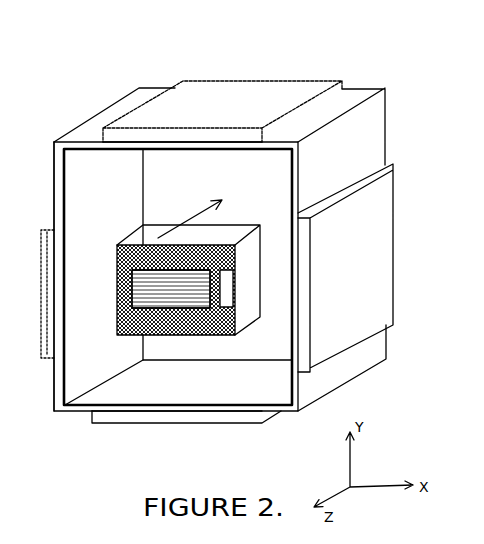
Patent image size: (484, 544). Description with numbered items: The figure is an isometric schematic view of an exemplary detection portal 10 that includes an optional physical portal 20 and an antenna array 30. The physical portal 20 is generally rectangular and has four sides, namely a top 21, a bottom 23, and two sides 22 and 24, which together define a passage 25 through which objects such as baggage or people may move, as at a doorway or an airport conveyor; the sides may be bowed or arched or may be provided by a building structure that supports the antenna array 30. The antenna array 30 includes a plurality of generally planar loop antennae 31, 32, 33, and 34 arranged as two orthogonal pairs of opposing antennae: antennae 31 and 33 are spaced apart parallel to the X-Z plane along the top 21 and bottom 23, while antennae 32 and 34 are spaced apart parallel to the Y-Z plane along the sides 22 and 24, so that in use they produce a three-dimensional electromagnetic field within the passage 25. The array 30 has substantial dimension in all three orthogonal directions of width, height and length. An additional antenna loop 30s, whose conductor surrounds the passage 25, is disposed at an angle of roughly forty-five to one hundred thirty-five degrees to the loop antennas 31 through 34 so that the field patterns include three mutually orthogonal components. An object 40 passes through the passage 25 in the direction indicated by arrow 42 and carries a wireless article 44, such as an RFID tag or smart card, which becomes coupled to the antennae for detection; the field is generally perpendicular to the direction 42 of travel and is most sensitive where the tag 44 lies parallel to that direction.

The detection portal 10 is at (93, 78).
The physical portal 20 is at (399, 108).
The top 21 is at (352, 98).
The side 22 is at (376, 354).
The bottom 23 is at (292, 411).
The side 24 is at (53, 393).
The passage 25 is at (276, 182).
The antenna array 30 is at (228, 247).
The additional antenna loop 30s is at (122, 152).
The loop antenna 31 is at (279, 81).
The loop antenna 32 is at (385, 217).
The loop antenna 33 is at (178, 418).
The loop antenna 34 is at (43, 250).
The object 40 is at (243, 323).
The arrow 42 is at (197, 212).
The wireless article 44 is at (226, 288).